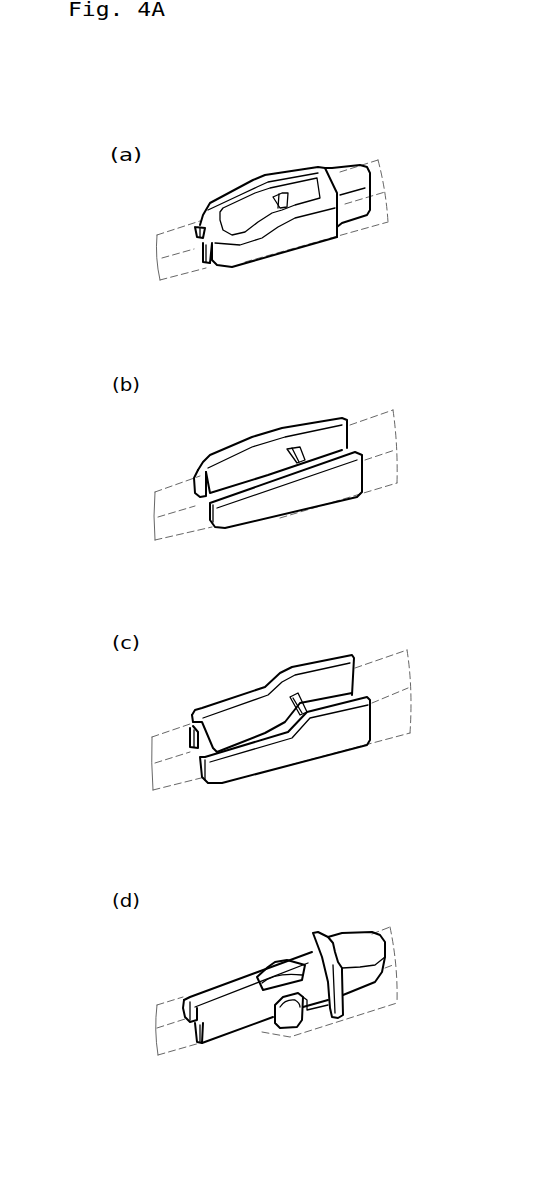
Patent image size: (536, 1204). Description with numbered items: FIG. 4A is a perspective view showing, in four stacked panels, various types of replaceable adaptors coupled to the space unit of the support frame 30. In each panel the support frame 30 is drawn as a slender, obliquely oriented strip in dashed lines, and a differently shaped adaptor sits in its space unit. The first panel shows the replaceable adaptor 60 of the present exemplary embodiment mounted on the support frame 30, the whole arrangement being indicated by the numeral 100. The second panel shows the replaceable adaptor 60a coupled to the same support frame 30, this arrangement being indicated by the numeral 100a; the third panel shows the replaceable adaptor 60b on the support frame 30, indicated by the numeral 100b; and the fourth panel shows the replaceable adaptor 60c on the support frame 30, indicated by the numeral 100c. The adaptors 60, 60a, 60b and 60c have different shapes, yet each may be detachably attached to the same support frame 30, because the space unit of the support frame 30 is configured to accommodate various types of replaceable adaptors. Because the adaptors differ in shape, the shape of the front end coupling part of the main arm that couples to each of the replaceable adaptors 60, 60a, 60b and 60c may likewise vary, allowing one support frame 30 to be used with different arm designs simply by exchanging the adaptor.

The support frame 30 is at (168, 243).
The replaceable adaptor 60 is at (320, 180).
The wiper blade assembly 100 is at (282, 165).
The replaceable adaptor 60a is at (305, 418).
The wiper blade assembly (second embodiment) 100a is at (285, 421).
The replaceable adaptor 60b is at (303, 668).
The wiper blade assembly (third embodiment) 100b is at (283, 668).
The replaceable adaptor 60c is at (335, 947).
The wiper blade assembly (fourth embodiment) 100c is at (284, 939).